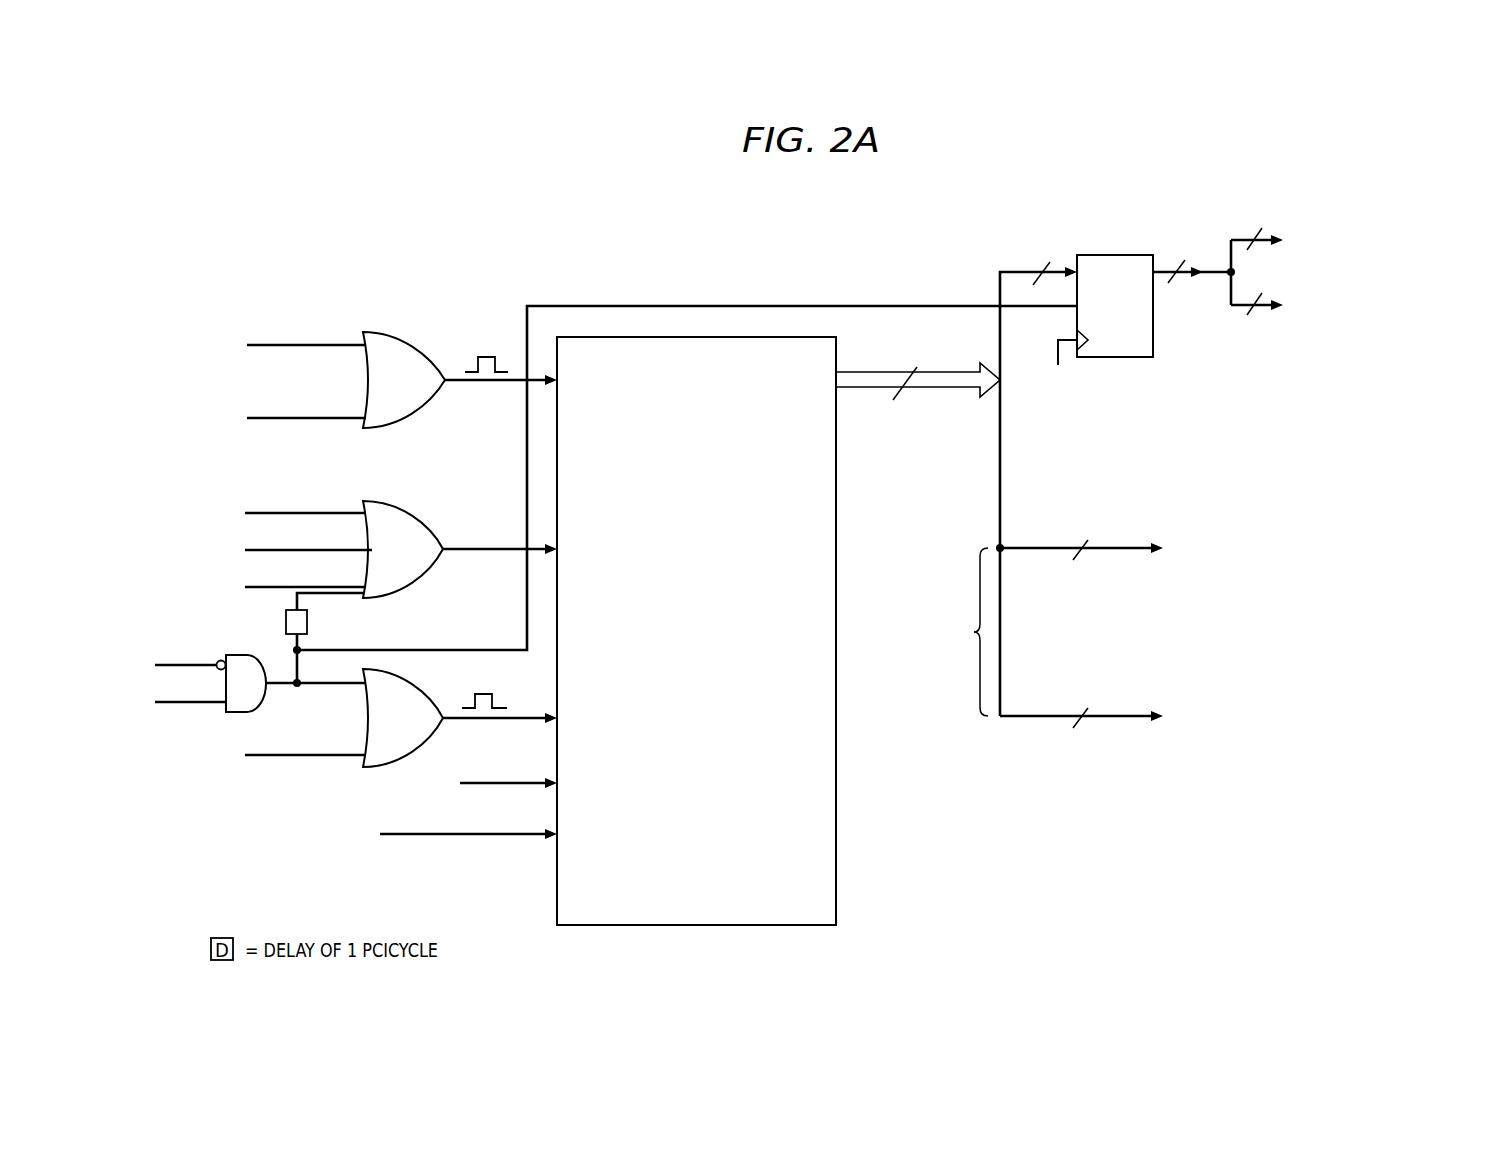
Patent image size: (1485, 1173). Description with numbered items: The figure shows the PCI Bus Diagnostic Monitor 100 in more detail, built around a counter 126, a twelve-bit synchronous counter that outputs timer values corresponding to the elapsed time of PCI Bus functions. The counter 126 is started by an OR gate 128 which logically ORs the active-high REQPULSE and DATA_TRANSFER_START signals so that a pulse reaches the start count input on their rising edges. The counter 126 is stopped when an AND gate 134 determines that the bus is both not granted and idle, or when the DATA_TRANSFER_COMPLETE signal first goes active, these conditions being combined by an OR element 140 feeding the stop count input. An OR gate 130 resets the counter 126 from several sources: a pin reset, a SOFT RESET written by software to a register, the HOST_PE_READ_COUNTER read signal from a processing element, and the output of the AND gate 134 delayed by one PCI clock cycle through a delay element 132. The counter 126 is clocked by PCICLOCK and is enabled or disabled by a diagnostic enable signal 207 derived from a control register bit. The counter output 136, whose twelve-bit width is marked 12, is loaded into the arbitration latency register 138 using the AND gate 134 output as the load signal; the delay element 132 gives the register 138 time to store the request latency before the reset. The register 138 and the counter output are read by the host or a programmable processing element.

The PCI Bus Diagnostic Monitor 100 is at (832, 221).
The OR gate 128 is at (410, 343).
The OR gate 130 is at (410, 512).
The delay element 132 is at (308, 622).
The AND gate 134 is at (233, 655).
The OR element 140 is at (410, 680).
The counter 126 is at (693, 927).
The counter output bus 136 is at (945, 390).
The arbitration latency register 138 is at (1153, 343).
The diagnostic enable signal 207 is at (462, 837).
The bus width indicator 12 is at (1154, 453).